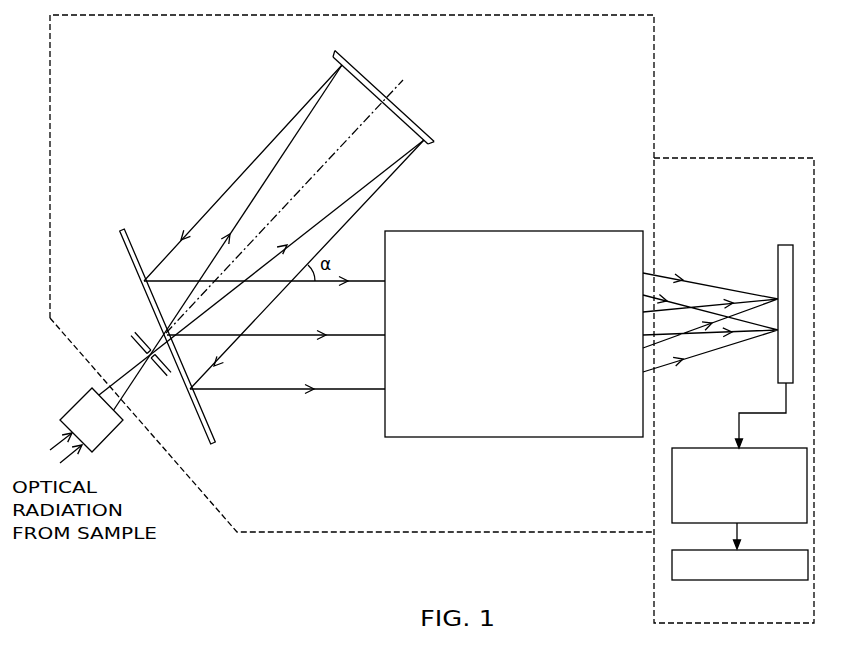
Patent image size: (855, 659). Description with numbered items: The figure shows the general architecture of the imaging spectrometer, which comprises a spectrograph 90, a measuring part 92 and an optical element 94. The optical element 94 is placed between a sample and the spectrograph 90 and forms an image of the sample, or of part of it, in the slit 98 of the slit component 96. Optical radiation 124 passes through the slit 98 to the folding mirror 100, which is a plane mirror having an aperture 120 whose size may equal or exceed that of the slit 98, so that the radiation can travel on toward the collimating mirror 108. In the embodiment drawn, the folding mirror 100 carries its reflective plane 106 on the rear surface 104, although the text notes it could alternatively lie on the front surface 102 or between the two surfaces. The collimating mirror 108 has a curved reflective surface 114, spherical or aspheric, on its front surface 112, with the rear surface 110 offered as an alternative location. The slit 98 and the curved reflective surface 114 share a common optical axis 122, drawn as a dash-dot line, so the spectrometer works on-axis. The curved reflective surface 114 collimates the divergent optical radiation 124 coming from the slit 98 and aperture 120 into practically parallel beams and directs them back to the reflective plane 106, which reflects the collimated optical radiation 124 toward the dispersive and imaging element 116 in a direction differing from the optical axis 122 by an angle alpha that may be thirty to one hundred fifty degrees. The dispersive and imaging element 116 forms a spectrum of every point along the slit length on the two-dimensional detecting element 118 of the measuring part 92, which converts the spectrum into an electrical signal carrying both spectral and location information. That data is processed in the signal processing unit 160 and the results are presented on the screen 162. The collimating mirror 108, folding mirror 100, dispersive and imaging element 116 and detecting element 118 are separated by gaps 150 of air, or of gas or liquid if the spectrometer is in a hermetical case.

The spectrograph 90 is at (654, 52).
The measuring part 92 is at (783, 158).
The optical element 94 is at (80, 398).
The slit component 96 is at (162, 372).
The slit 98 is at (146, 352).
The folding mirror 100 is at (217, 449).
The front surface 102 is at (127, 254).
The rear surface 104 is at (130, 244).
The reflective plane 106 is at (212, 430).
The collimating mirror 108 is at (411, 120).
The rear surface 110 is at (365, 67).
The front surface 112 is at (356, 81).
The curved reflective surface 114 is at (429, 146).
The dispersive and imaging element 116 is at (523, 348).
The two-dimensional detecting element 118 is at (779, 245).
The aperture 120 is at (165, 335).
The optical axis 122 is at (300, 193).
The optical radiation 124 is at (320, 220).
The gap 150 is at (701, 262).
The signal processing unit 160 is at (722, 448).
The screen 162 is at (732, 581).